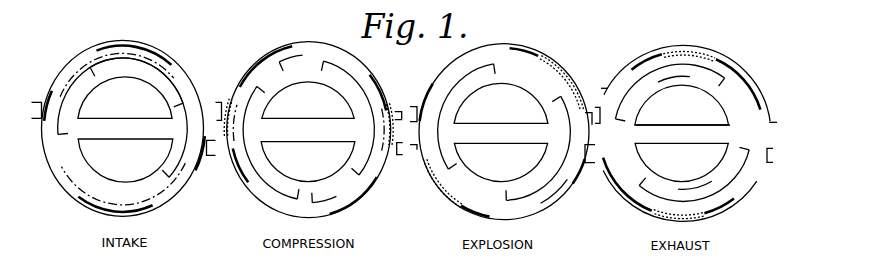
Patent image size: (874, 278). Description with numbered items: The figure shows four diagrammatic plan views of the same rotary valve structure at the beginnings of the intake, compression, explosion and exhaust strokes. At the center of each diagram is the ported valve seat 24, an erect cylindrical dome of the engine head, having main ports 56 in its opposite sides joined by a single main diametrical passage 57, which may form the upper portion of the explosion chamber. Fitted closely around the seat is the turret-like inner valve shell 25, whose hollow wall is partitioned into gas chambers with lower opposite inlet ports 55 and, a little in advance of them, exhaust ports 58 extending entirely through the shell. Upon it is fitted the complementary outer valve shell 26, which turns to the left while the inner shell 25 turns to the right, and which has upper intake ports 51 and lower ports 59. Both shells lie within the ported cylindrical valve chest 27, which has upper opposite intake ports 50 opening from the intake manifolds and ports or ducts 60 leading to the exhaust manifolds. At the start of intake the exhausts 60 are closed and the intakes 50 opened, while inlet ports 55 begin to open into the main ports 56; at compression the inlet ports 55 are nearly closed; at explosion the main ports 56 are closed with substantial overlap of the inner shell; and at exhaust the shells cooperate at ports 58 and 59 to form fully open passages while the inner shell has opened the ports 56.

The ported valve seat 24 is at (689, 132).
The inner valve shell 25 is at (509, 132).
The outer valve shell 26 is at (312, 129).
The valve chest 27 is at (129, 130).
The upper opposite ports of the chest 50 is at (129, 134).
The upper intake ports of the outer valve shell 51 is at (308, 139).
The lower opposite ports of the gas chambers 55 is at (501, 132).
The main ports 56 is at (682, 133).
The main diametrical passage 57 is at (681, 162).
The exhaust ports 58 is at (504, 132).
The lower ports of the outer valve shell 59 is at (312, 143).
The exhaust ports or ducts of the chest 60 is at (123, 121).